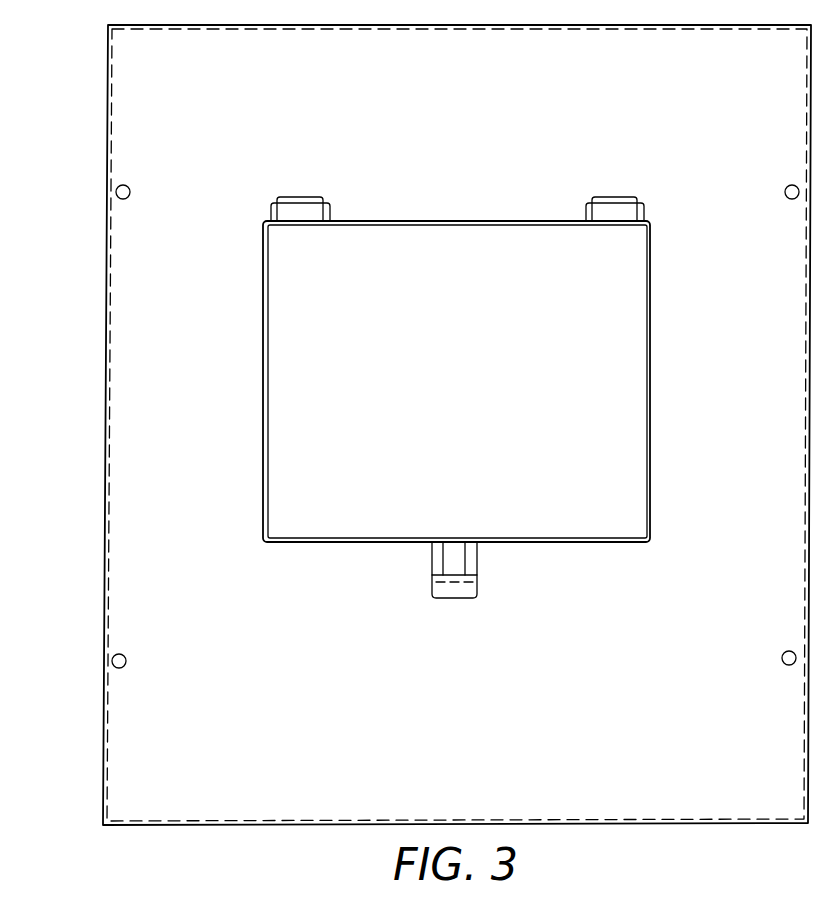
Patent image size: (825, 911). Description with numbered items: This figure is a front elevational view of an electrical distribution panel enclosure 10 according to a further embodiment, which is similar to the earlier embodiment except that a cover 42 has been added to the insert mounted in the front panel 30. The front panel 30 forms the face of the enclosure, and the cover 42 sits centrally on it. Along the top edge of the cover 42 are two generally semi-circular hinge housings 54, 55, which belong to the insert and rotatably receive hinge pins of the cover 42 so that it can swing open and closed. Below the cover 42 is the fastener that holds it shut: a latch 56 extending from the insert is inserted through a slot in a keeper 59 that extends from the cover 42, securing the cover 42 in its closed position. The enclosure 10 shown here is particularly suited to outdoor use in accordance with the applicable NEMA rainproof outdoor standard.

The electrical distribution panel enclosure 10 is at (46, 111).
The front panel 30 is at (113, 353).
The cover 42 is at (278, 394).
The hinge housing 54 is at (302, 205).
The hinge housing 55 is at (610, 198).
The latch 56 is at (458, 557).
The keeper 59 is at (450, 598).